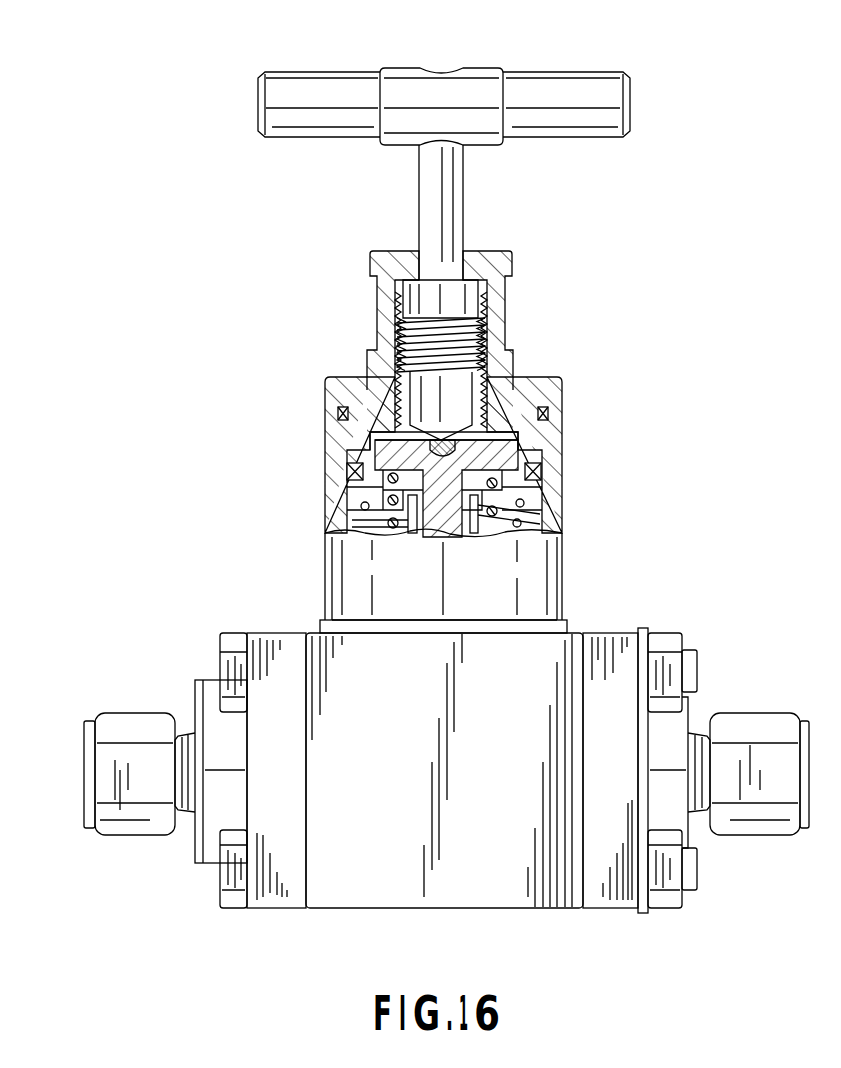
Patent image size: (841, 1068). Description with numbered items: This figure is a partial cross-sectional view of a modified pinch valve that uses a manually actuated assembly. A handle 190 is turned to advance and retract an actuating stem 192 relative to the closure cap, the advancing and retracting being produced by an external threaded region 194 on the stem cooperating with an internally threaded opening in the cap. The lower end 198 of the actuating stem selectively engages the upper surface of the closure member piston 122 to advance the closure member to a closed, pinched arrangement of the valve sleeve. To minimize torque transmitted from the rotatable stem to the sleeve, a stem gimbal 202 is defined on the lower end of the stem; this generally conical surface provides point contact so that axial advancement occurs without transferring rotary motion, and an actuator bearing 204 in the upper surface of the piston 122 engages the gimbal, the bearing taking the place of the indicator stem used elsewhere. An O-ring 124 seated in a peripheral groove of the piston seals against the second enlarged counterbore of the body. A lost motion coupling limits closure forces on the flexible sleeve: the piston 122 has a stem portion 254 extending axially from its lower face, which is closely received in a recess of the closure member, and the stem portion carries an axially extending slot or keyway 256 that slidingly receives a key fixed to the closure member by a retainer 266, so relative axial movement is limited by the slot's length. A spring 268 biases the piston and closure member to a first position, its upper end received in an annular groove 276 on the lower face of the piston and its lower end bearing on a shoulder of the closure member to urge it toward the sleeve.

The handle 190 is at (548, 90).
The actuating stem 192 is at (430, 189).
The external threaded region 194 is at (490, 331).
The lower end of the actuating stem 198 is at (447, 400).
The stem gimbal 202 is at (458, 434).
The actuator bearing 204 is at (452, 447).
The closure member piston 122 is at (372, 457).
The O-ring 124 is at (548, 472).
The annular groove 276 is at (390, 486).
The retainer 266 is at (493, 498).
The spring 268 is at (493, 518).
The stem portion 254 is at (432, 507).
The slot or keyway 256 is at (460, 533).